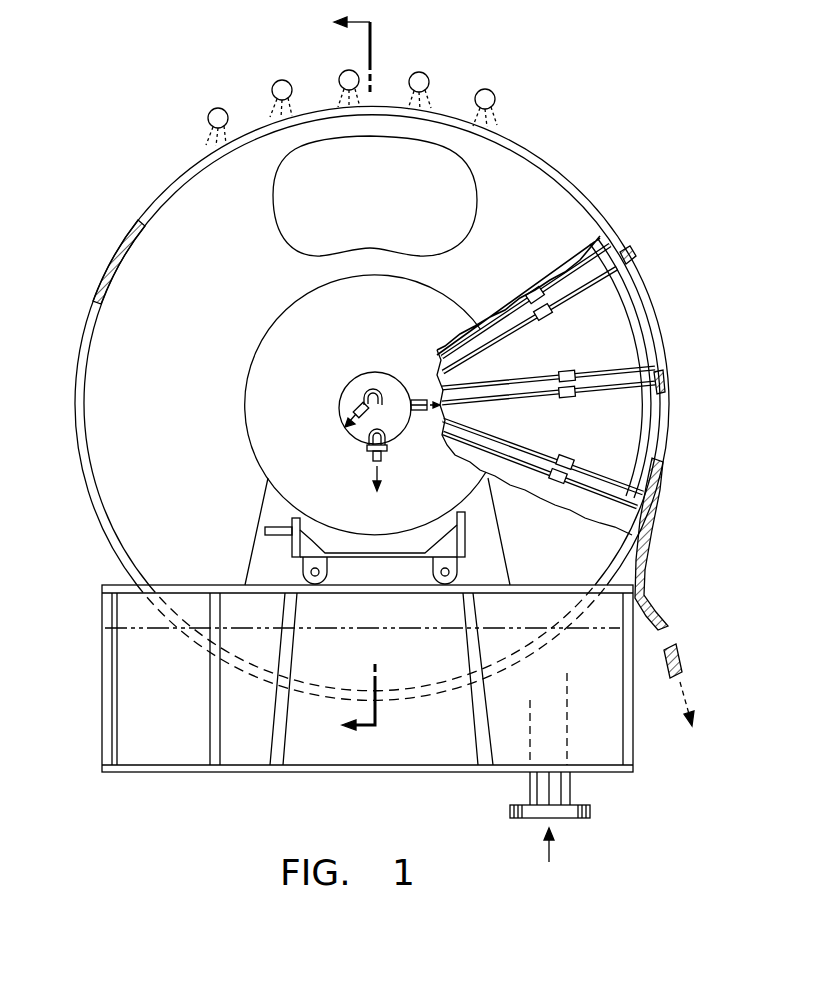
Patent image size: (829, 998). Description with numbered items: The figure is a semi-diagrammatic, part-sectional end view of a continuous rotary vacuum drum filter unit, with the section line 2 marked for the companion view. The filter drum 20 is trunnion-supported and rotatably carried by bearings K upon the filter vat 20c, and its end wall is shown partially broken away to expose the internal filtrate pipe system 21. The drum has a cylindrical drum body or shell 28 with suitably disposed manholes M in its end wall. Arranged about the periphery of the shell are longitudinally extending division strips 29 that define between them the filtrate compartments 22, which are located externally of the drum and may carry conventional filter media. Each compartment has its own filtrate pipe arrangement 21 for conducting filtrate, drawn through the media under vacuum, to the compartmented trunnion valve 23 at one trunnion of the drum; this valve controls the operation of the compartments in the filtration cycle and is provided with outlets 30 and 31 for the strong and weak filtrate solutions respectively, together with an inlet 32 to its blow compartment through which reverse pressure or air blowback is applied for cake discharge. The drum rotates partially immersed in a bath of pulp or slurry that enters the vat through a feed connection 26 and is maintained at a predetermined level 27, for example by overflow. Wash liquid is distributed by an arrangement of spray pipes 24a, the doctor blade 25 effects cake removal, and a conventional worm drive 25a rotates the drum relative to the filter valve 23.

The section line 2- 2 is at (342, 373).
The filter drum 20 is at (172, 388).
The filter vat 20c is at (102, 725).
The filtrate pipe system 21 is at (506, 334).
The filtrate compartments 22 is at (630, 302).
The trunnion valve 23 is at (340, 405).
The spray pipes 24a is at (222, 108).
The doctor blade 25 is at (636, 567).
The worm drive 25a is at (290, 547).
The feed connection 26 is at (538, 776).
The level 27 is at (326, 622).
The drum body or shell 28 is at (630, 325).
The division strips 29 is at (632, 274).
The outlet for strong filtrate solution 30 is at (366, 441).
The outlet for weak filtrate solution 31 is at (373, 388).
The inlet to blow compartment 32 is at (420, 400).
The bearings K is at (260, 524).
The manholes M is at (477, 205).